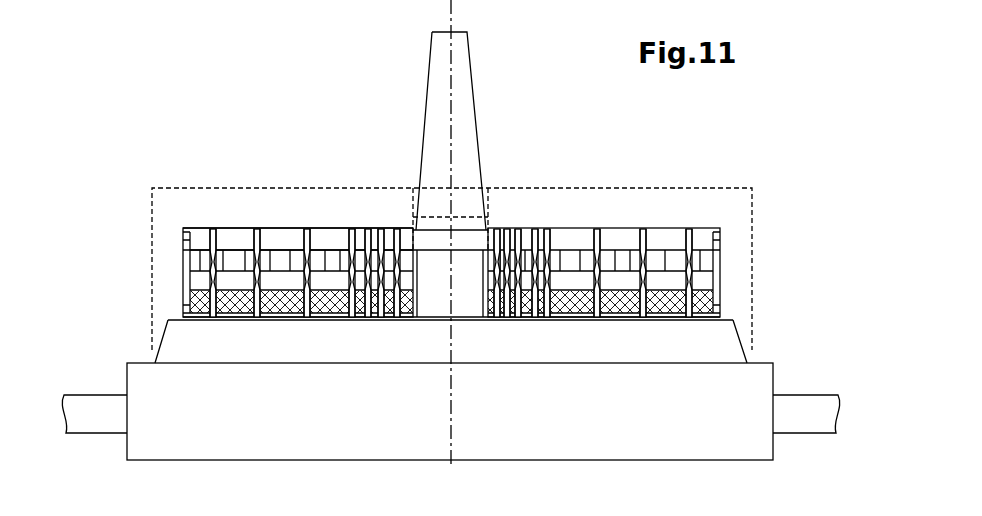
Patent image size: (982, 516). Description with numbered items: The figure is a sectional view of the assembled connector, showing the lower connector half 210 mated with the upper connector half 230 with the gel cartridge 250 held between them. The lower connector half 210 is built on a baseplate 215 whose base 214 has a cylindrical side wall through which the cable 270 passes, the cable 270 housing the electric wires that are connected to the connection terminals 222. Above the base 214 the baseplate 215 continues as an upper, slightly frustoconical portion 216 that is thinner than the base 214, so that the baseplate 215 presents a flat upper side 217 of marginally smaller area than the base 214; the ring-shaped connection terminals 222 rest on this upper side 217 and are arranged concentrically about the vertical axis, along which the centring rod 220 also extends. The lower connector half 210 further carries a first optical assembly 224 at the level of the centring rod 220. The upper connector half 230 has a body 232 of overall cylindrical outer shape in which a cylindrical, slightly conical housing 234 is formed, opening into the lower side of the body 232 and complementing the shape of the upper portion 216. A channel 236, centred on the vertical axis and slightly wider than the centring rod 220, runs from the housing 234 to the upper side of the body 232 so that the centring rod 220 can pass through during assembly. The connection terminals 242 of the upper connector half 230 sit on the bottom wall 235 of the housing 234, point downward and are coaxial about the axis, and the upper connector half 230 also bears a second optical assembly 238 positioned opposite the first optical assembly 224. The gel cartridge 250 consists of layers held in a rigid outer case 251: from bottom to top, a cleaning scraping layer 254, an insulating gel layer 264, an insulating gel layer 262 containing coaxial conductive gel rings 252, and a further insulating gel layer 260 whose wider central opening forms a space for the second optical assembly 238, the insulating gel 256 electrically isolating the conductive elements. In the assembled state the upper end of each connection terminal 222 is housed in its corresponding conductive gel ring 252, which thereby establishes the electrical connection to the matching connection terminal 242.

The lower connector half 210 is at (791, 359).
The base 214 is at (587, 440).
The baseplate 215 is at (133, 359).
The upper frustoconical portion 216 is at (173, 333).
The flat upper side 217 is at (323, 320).
The centring rod 220 is at (465, 108).
The connection terminals 222 is at (672, 295).
The first optical assembly 224 is at (433, 240).
The upper connector half 230 is at (157, 180).
The body 232 is at (564, 203).
The housing 234 is at (180, 243).
The bottom wall 235 is at (660, 225).
The channel 236 is at (489, 195).
The second optical assembly 238 is at (412, 243).
The connection terminals 242 is at (690, 240).
The gel cartridge 250 is at (277, 238).
The rigid outer case 251 is at (715, 243).
The conductive gel rings 252 is at (680, 243).
The cleaning scraping layer 254 is at (717, 295).
The insulating gel 256 is at (240, 258).
The insulating gel layer 260 is at (202, 230).
The insulating gel layer 262 is at (724, 263).
The insulating gel layer 264 is at (197, 283).
The cable 270 is at (93, 422).